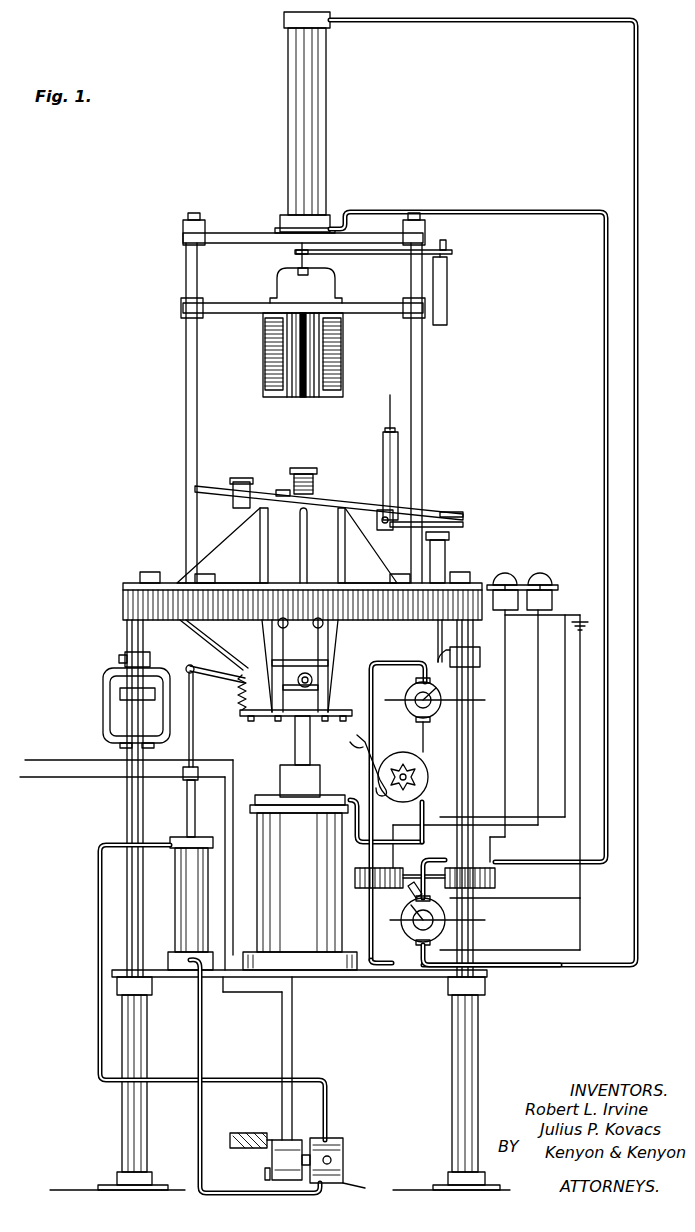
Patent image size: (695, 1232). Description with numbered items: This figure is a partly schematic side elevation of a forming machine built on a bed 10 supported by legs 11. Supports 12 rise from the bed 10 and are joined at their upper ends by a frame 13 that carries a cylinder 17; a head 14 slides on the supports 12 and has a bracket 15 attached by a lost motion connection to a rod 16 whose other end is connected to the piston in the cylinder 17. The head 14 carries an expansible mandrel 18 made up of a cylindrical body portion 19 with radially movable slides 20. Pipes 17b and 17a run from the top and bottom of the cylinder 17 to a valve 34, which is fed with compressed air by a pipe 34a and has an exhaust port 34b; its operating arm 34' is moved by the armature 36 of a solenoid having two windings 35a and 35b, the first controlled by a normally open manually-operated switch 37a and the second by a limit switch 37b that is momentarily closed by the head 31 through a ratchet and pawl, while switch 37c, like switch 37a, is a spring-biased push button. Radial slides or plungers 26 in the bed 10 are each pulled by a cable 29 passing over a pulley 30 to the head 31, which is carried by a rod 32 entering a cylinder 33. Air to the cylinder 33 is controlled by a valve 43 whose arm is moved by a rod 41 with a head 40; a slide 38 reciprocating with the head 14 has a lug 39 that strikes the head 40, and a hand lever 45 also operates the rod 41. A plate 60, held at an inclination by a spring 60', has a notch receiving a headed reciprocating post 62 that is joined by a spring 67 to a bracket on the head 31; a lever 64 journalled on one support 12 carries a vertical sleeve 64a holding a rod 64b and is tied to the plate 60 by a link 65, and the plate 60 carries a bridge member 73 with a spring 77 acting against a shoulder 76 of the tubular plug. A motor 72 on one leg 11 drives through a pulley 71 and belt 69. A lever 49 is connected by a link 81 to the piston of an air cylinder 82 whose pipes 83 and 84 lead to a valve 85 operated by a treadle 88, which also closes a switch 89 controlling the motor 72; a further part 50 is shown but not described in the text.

The bed 10 is at (123, 592).
The legs 11 is at (140, 790).
The supports 12 is at (422, 382).
The frame 13 is at (423, 238).
The head 14 is at (228, 310).
The bracket 15 is at (335, 285).
The rod 16 is at (300, 262).
The cylinder 17 is at (318, 142).
The pipe 17a is at (448, 212).
The pipe 17b is at (458, 24).
The expansible mandrel 18 is at (264, 352).
The cylindrical body portion 19 is at (296, 393).
The slides 20 is at (336, 355).
The slides or plungers 26 is at (212, 546).
The cable 29 is at (335, 670).
The pulley 30 is at (334, 624).
The head 31 is at (336, 710).
The rod 32 is at (297, 750).
The cylinder 33 is at (322, 796).
The valve 34 is at (457, 920).
The operating arm 34' is at (355, 896).
The pipe 34a is at (485, 924).
The exhaust port 34b is at (398, 926).
The winding 35a is at (495, 880).
The winding 35b is at (356, 873).
The armature 36 is at (428, 870).
The manually-operated switch 37a is at (506, 580).
The limit switch 37b is at (389, 785).
The switch 37c is at (497, 598).
The slide 38 is at (452, 262).
The lug 39 is at (447, 305).
The head 40 is at (445, 542).
The rod 41 is at (438, 636).
The valve 43 is at (406, 697).
The hand lever 45 is at (472, 650).
The lever 49 is at (222, 680).
The link 50 is at (205, 638).
The plate 60 is at (329, 480).
The spring 60' is at (369, 498).
The headed reciprocating post 62 is at (243, 480).
The lever 64 is at (463, 525).
The vertical sleeve 64a is at (398, 446).
The rod 64b is at (389, 410).
The link 65 is at (452, 512).
The spring 67 is at (254, 692).
The belt 69 is at (119, 660).
The pulley 71 is at (125, 658).
The motor 72 is at (103, 702).
The bridge member 73 is at (283, 490).
The shoulder 76 is at (301, 468).
The spring 77 is at (310, 480).
The link 81 is at (194, 752).
The air cylinder 82 is at (190, 868).
The pipe 83 is at (112, 845).
The pipe 84 is at (204, 1036).
The valve 85 is at (326, 1140).
The treadle 88 is at (251, 1129).
The switch 89 is at (265, 1176).